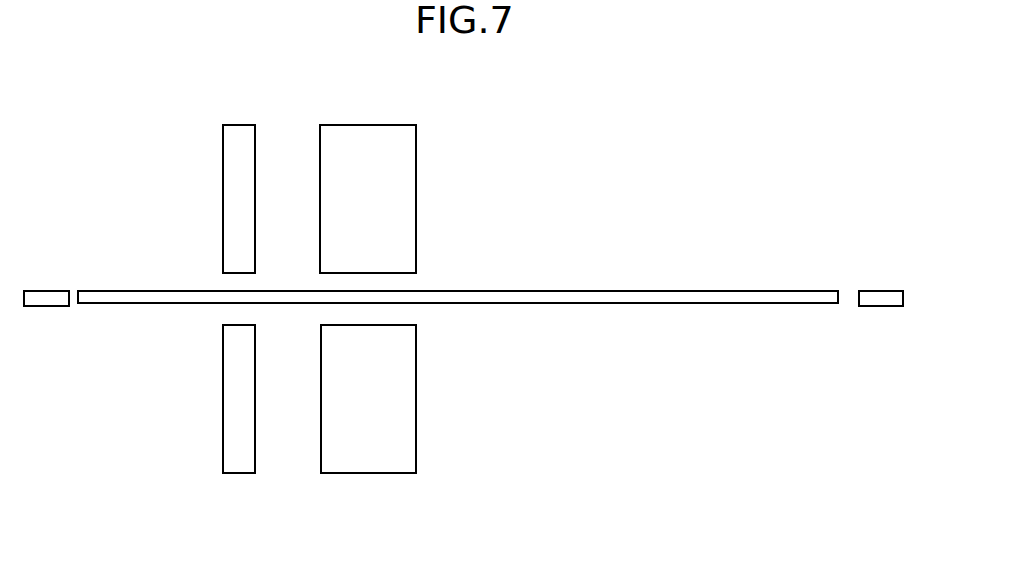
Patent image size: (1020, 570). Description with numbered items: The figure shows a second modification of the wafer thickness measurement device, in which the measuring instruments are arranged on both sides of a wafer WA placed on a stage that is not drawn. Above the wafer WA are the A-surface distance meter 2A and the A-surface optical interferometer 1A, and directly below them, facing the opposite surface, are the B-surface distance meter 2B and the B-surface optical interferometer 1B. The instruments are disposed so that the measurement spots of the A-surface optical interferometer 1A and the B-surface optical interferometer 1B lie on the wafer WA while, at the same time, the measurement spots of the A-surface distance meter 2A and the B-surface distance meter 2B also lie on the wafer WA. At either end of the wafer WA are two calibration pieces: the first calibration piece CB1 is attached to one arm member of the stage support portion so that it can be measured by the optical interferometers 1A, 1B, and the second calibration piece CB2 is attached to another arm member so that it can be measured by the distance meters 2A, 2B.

The wafer WA is at (130, 290).
The first calibration piece CB1 is at (883, 306).
The second calibration piece CB2 is at (50, 306).
The A-surface optical interferometer 1A is at (416, 141).
The B-surface optical interferometer 1B is at (416, 458).
The A-surface distance meter 2A is at (223, 142).
The B-surface distance meter 2B is at (223, 459).